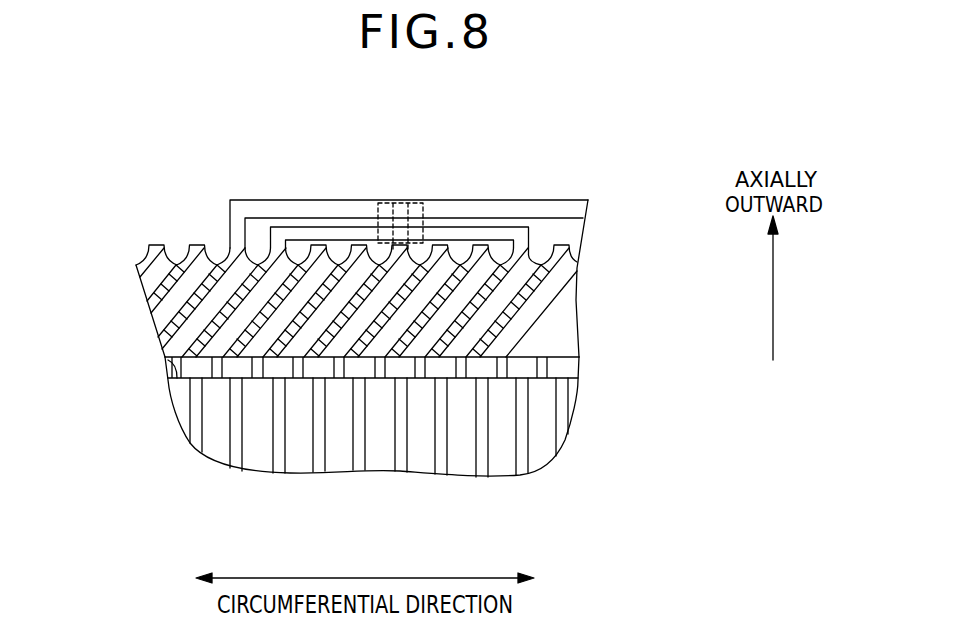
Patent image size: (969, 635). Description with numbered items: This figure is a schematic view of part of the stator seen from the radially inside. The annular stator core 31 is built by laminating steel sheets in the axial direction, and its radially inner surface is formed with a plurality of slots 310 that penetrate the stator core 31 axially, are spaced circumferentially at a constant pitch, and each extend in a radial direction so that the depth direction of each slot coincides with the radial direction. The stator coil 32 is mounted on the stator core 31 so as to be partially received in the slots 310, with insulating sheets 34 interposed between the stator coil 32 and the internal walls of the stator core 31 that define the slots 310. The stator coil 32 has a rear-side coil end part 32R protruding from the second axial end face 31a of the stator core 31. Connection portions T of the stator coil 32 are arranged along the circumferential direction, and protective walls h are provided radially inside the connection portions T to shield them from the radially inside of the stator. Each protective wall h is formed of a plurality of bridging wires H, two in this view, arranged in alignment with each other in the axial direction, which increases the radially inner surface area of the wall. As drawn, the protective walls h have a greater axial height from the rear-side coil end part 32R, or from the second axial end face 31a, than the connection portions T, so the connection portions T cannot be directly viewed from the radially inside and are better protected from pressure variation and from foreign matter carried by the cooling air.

The stator core 31 is at (541, 462).
The second axial end face 31a is at (166, 363).
The slots 310 is at (562, 424).
The insulating sheets 34 is at (563, 372).
The stator coil 32 is at (603, 202).
The rear-side coil end part 32R is at (162, 233).
The bridging wires H is at (281, 200).
The protective walls h is at (314, 210).
The connection portions T is at (401, 204).